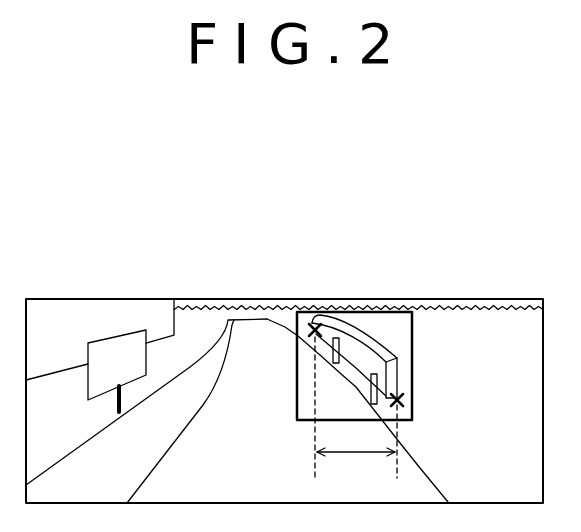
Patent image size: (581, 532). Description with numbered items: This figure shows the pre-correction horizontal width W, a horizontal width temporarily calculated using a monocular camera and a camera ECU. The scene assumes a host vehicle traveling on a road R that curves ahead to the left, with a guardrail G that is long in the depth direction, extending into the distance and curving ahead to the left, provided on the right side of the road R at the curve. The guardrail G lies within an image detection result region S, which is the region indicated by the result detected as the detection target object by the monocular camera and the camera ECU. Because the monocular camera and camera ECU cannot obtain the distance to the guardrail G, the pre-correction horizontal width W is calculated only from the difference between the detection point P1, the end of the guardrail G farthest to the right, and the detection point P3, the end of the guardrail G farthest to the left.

The detection point P3 is at (310, 331).
The detection point P1 is at (403, 401).
The guardrail G is at (377, 333).
The image detection result region S is at (413, 364).
The pre-correction horizontal width W is at (356, 410).
The road R is at (432, 474).